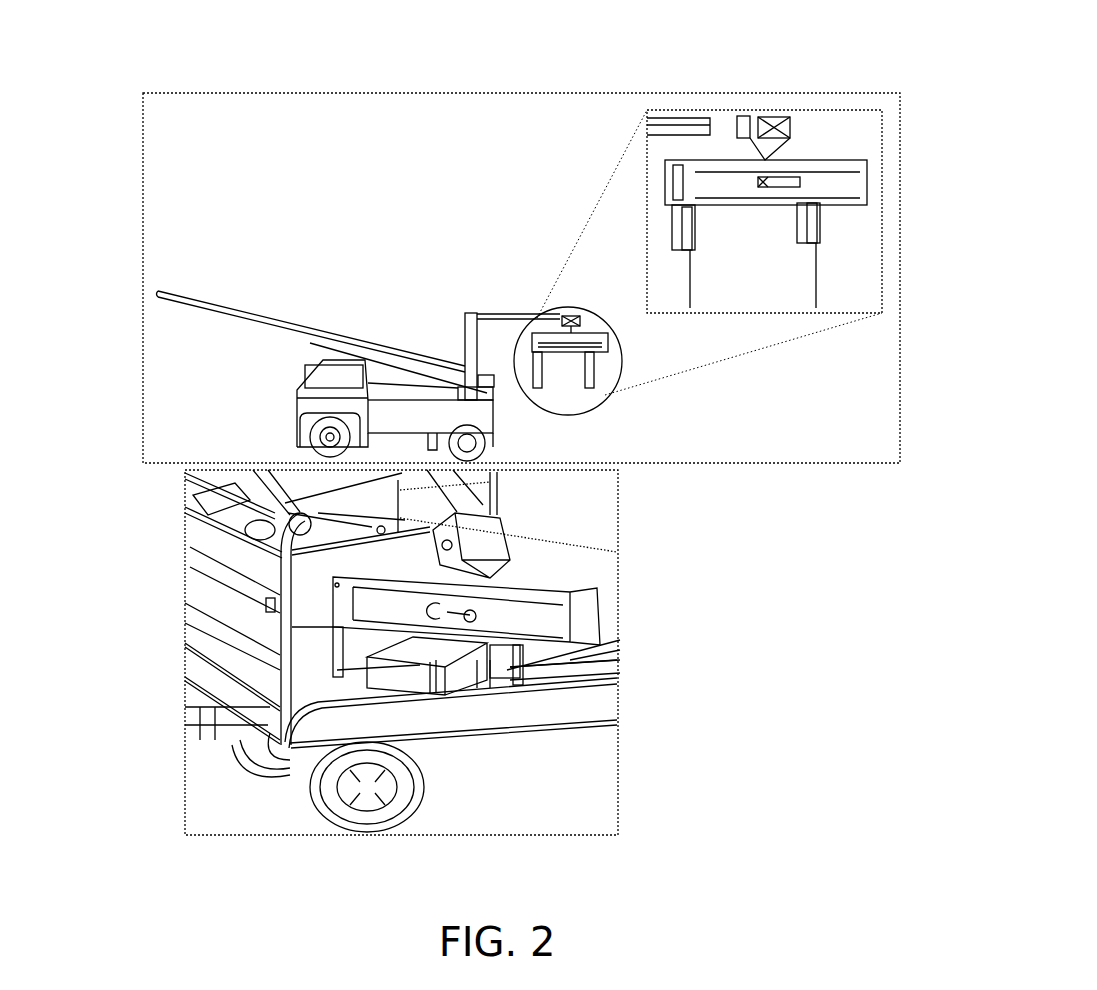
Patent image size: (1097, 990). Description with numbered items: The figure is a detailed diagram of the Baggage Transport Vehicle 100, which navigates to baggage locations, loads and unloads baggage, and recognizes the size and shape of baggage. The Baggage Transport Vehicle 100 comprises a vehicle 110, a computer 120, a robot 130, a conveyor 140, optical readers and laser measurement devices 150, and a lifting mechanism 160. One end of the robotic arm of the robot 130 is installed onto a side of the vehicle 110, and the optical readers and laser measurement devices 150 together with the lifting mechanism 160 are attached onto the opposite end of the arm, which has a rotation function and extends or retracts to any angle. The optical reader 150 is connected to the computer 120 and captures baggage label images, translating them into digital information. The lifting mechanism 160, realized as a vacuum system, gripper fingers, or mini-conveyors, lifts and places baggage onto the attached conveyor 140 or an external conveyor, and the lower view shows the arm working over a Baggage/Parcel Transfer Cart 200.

The Baggage Transport Vehicle 100 is at (145, 142).
The vehicle 110 is at (306, 387).
The computer 120 is at (482, 386).
The robot 130 is at (468, 330).
The conveyor 140 is at (275, 323).
The optical readers and laser measurement devices 150 is at (578, 345).
The lifting mechanism 160 is at (598, 362).
The Baggage/Parcel Transfer Cart 200 is at (490, 713).